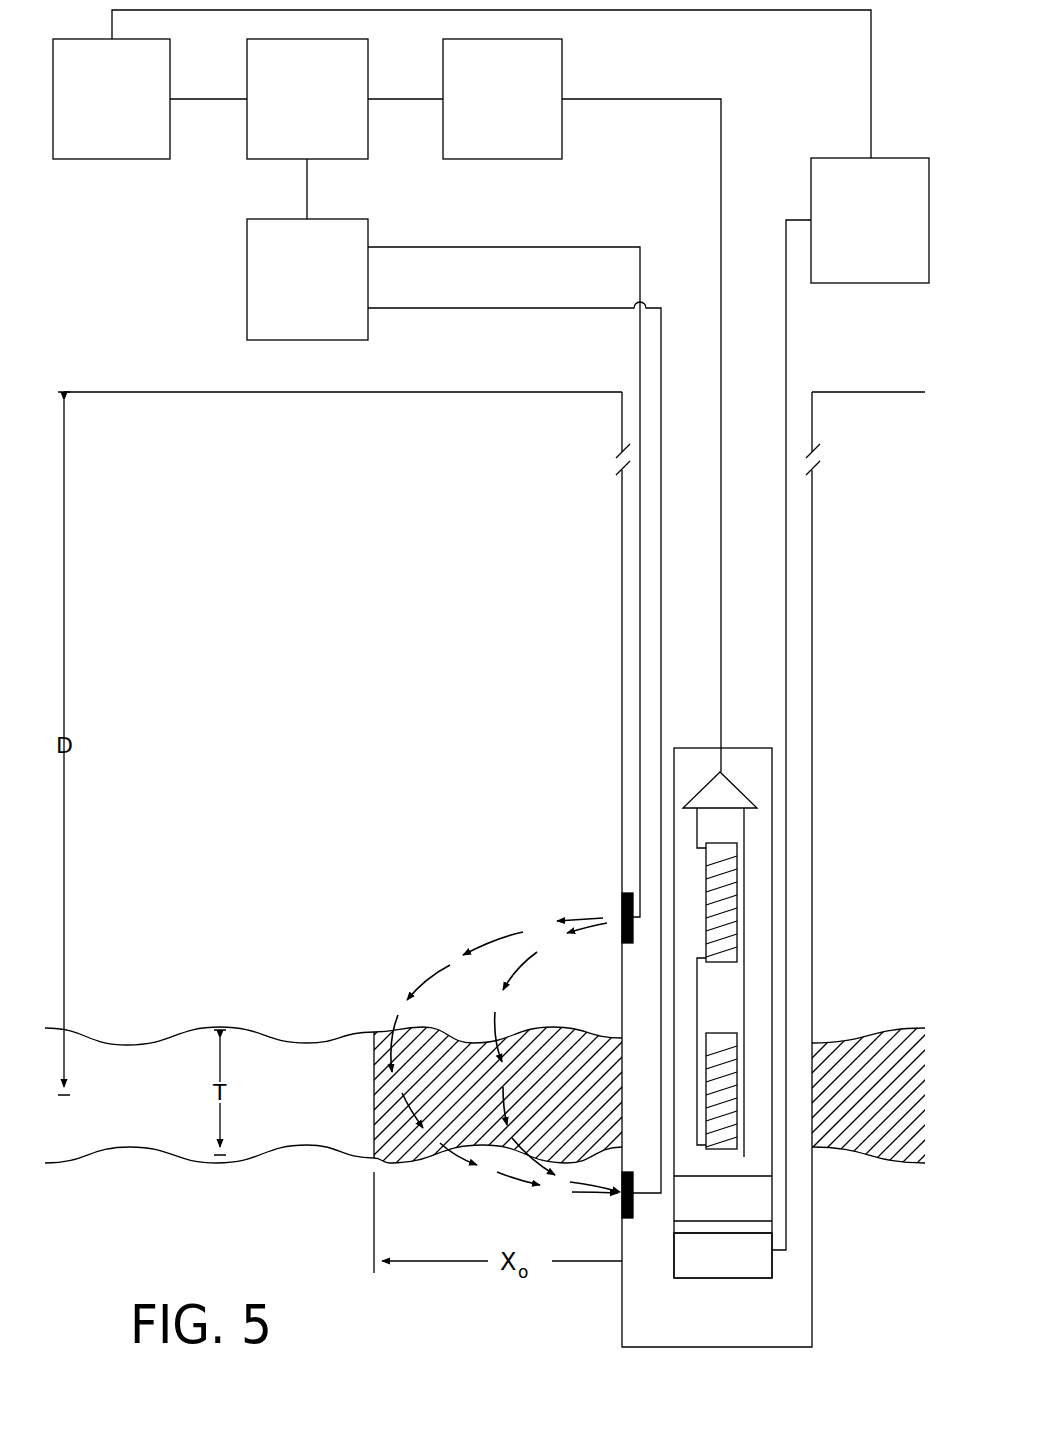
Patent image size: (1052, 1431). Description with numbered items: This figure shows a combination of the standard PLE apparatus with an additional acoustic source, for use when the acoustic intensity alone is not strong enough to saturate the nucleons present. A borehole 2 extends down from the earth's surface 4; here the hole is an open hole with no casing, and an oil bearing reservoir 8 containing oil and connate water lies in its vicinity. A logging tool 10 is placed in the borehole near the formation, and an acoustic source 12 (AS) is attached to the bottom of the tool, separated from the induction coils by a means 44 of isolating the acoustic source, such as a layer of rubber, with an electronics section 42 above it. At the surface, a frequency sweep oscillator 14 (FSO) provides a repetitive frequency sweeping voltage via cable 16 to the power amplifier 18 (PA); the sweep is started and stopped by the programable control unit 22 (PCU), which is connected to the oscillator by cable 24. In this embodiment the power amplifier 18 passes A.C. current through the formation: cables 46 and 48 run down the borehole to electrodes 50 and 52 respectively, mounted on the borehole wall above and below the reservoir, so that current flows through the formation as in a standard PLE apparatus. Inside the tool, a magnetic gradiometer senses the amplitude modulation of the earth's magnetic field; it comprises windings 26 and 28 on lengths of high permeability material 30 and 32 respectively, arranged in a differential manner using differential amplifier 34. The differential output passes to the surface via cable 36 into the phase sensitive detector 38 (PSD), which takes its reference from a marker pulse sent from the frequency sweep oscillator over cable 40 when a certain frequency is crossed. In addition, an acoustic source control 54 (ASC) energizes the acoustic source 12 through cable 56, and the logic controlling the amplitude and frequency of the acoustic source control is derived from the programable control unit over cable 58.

The borehole 2 is at (707, 1347).
The earth's surface 4 is at (502, 392).
The oil bearing reservoir 8 is at (272, 1152).
The logging tool 10 is at (740, 748).
The acoustic source 12 is at (772, 1265).
The frequency sweep oscillator 14 is at (368, 140).
The cable 16 is at (307, 192).
The power amplifier 18 is at (368, 328).
The programable control unit 22 is at (172, 140).
The cable 24 is at (227, 98).
The winding 26 is at (698, 840).
The winding 28 is at (743, 1043).
The length of high permeability material 30 is at (720, 962).
The length of high permeability material 32 is at (722, 1148).
The differential amplifier 34 is at (700, 783).
The cable 36 is at (720, 98).
The phase sensitive detector 38 is at (562, 80).
The cable 40 is at (428, 98).
The electronics section 42 is at (772, 1203).
The means of isolating the acoustic source 44 is at (772, 1229).
The cable 46 is at (503, 247).
The cable 48 is at (497, 308).
The electrode 50 is at (622, 905).
The electrode 52 is at (620, 1206).
The acoustic source control 54 is at (811, 168).
The cable 56 is at (786, 295).
The cable 58 is at (871, 110).